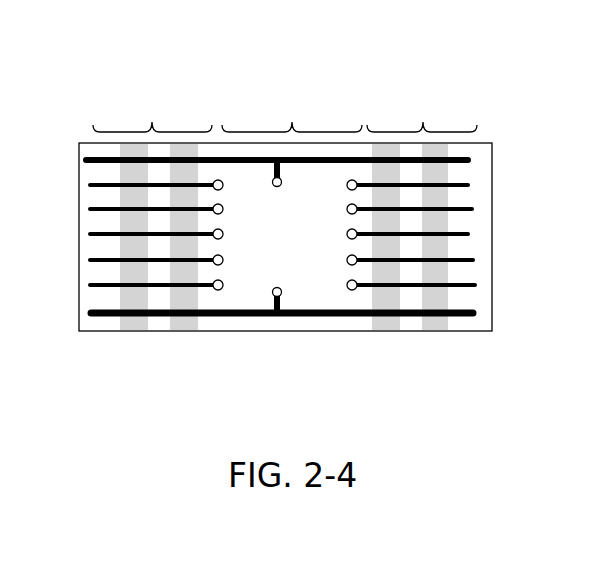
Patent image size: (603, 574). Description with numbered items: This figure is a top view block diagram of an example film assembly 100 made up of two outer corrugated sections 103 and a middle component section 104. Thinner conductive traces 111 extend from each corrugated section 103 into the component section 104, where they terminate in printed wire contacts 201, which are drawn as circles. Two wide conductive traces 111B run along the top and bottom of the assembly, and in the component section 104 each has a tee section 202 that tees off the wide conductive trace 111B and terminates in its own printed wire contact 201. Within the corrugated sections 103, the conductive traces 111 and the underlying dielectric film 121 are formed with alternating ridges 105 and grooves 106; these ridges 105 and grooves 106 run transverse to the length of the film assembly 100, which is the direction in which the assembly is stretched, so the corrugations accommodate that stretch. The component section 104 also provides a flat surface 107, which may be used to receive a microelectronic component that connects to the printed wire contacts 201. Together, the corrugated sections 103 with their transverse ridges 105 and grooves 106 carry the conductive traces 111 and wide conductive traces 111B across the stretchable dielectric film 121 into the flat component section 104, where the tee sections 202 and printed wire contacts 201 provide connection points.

The film assembly 100 is at (478, 91).
The corrugated section 103 is at (285, 83).
The component section 104 is at (292, 83).
The ridge 105 is at (164, 323).
The groove 106 is at (137, 324).
The flat surface 107 is at (300, 318).
The conductive trace 111 is at (470, 236).
The wide conductive trace 111B is at (467, 159).
The dielectric film 121 is at (492, 213).
The printed wire contact 201 is at (223, 234).
The tee section 202 is at (281, 180).